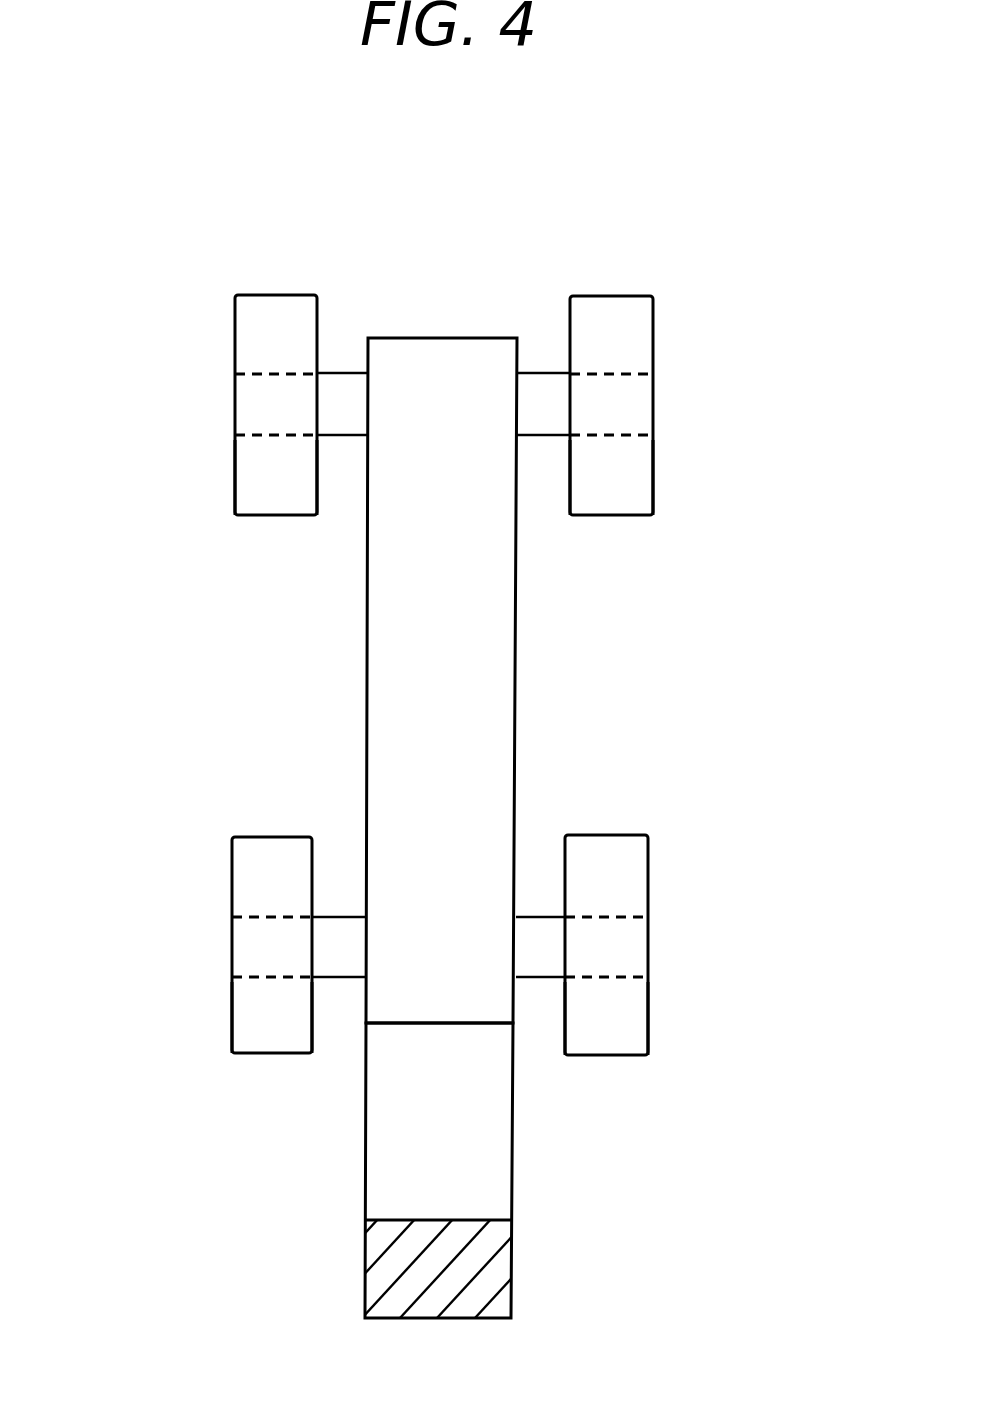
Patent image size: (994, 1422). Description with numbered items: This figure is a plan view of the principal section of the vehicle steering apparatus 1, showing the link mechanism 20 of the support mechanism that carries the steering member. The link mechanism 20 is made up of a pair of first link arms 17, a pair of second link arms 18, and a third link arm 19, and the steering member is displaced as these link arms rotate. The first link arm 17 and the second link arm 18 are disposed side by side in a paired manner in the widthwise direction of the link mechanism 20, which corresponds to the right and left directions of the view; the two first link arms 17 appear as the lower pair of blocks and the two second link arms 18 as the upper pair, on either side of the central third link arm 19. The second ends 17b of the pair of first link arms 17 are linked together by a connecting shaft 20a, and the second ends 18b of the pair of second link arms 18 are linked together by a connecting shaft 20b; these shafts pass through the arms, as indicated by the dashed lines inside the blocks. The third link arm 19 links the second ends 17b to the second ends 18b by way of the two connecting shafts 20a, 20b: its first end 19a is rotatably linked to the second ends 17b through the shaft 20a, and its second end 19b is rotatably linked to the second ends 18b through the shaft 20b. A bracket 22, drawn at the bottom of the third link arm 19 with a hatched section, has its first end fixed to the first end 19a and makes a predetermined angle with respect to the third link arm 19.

The vehicle steering apparatus 1 is at (182, 240).
The first link arm 17 is at (218, 870).
The second end of first link arm 17b is at (257, 1024).
The second link arm 18 is at (222, 328).
The second end of second link arm 18b is at (259, 484).
The third link arm 19 is at (490, 700).
The first end of third link arm 19a is at (396, 990).
The second end of third link arm 19b is at (398, 449).
The link mechanism 20 is at (620, 283).
The connecting shaft 20a is at (537, 940).
The connecting shaft 20b is at (543, 418).
The bracket 22 is at (493, 1153).